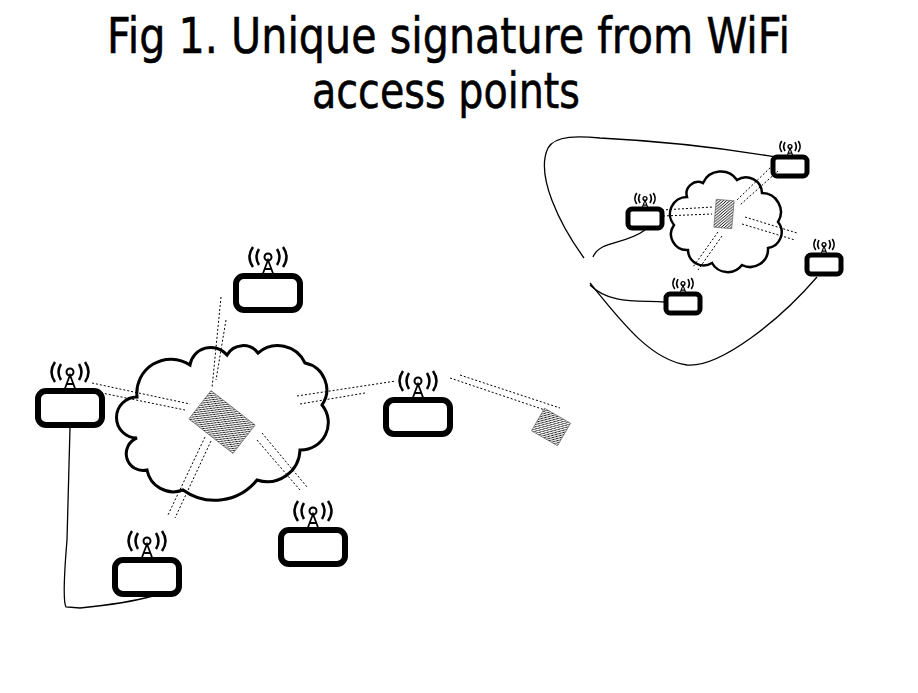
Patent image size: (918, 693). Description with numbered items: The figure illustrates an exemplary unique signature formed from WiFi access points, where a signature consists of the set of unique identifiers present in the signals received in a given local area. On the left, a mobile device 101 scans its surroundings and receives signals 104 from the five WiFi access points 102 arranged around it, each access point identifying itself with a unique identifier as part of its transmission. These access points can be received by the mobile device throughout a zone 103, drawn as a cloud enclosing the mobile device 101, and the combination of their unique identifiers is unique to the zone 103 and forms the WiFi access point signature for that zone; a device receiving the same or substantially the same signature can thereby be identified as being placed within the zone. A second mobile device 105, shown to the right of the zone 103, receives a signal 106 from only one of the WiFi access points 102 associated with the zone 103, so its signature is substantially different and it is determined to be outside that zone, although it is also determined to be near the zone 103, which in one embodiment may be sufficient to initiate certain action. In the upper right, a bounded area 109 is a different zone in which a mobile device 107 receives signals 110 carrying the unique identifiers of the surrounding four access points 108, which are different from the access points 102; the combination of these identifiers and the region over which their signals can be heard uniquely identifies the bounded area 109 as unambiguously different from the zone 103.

The mobile device 101 is at (240, 408).
The WiFi access points 102 is at (416, 376).
The zone 103 is at (190, 356).
The signals 104 is at (118, 388).
The mobile device 105 is at (570, 425).
The WiFi signal from access point 106 is at (521, 393).
The mobile device 107 is at (741, 262).
The access points 108 is at (692, 251).
The bounded area 109 is at (672, 186).
The signals 110 is at (762, 178).